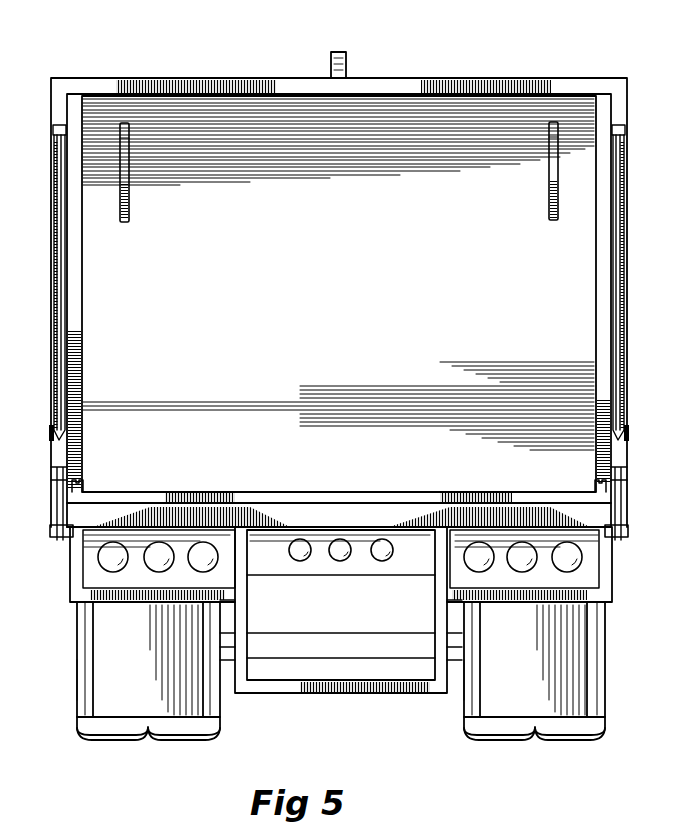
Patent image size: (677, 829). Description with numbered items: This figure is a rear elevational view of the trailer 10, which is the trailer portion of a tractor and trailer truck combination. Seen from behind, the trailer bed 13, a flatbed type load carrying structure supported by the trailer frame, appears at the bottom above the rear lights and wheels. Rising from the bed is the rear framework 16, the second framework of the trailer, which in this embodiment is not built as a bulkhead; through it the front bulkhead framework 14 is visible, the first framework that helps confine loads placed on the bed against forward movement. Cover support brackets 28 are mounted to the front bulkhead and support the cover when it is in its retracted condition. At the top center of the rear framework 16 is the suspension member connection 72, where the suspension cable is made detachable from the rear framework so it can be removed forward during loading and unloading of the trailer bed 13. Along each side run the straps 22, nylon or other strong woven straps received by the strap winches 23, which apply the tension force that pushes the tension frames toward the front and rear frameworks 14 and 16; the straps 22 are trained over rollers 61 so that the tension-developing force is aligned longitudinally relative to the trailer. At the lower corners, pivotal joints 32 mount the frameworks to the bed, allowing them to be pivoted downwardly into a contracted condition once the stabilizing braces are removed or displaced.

The trailer portion 10 is at (228, 40).
The trailer bed 13 is at (309, 494).
The front bulkhead framework 14 is at (356, 297).
The rear framework 16 is at (562, 82).
The straps 22 is at (58, 245).
The strap winches 23 is at (50, 432).
The cover support brackets 28 is at (123, 123).
The pivotal joints 32 is at (84, 486).
The rollers 61 is at (50, 135).
The suspension member connection 72 is at (348, 58).